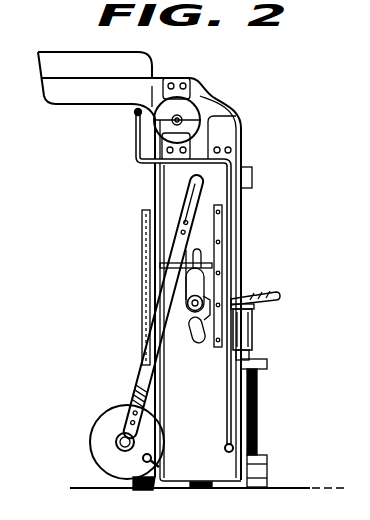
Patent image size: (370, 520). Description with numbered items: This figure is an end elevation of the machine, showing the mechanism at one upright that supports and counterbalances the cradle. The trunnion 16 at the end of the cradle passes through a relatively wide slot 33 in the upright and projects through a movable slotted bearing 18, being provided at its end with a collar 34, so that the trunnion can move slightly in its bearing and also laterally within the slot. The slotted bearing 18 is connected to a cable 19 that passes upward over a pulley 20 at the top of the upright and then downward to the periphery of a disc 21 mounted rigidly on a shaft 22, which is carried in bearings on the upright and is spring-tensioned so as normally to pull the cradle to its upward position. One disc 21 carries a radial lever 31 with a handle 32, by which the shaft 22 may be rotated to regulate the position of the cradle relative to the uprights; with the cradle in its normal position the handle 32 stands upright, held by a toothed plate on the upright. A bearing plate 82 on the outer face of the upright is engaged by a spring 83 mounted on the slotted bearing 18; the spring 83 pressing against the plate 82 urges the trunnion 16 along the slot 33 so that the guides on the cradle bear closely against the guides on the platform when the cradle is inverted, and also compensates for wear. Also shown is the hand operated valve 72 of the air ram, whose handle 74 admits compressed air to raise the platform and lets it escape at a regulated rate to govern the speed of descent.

The trunnion 16 is at (177, 338).
The slotted bearing 18 is at (187, 308).
The cable 19 is at (192, 168).
The pulley 20 is at (198, 118).
The disc 21 is at (105, 458).
The shaft 22 is at (116, 441).
The radial lever 31 is at (158, 331).
The handle 32 is at (188, 192).
The slot 33 is at (198, 343).
The collar 34 is at (190, 293).
The hand operated valve 72 is at (253, 332).
The handle 74 is at (266, 294).
The bearing plate 82 is at (217, 230).
The spring 83 is at (208, 340).